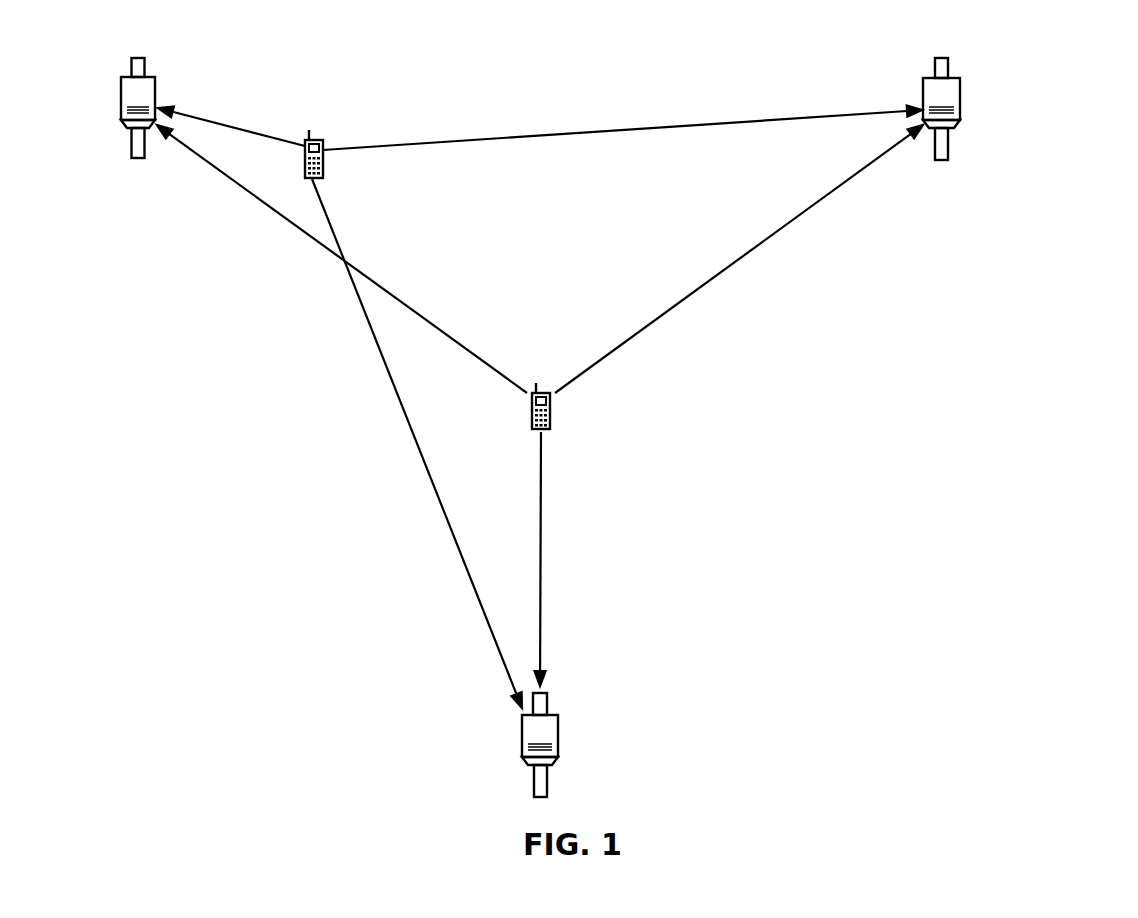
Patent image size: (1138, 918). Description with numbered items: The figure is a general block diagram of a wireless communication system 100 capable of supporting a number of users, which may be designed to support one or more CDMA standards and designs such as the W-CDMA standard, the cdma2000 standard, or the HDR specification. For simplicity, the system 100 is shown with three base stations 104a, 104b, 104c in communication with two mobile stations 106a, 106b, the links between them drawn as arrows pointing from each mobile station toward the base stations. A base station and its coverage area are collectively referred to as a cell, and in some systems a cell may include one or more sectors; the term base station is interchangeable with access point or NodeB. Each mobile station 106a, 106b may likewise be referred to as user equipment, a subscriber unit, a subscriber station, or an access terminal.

The wireless communication system 100 is at (1075, 276).
The base station 104a is at (150, 77).
The base station 104b is at (953, 78).
The base station 104c is at (549, 715).
The mobile station 106a is at (311, 137).
The mobile station 106b is at (534, 430).